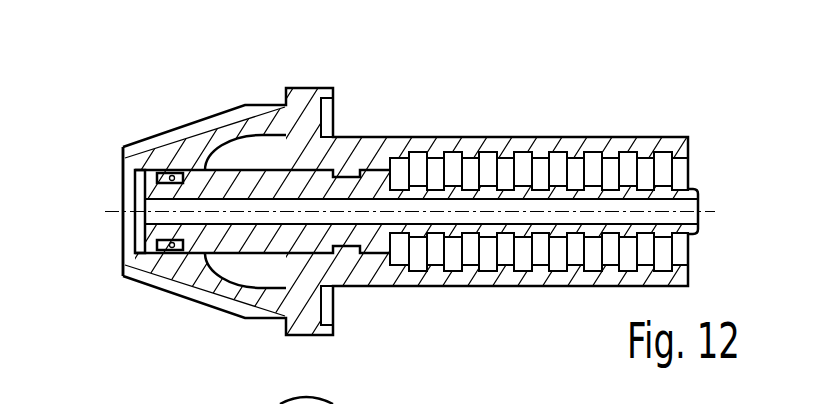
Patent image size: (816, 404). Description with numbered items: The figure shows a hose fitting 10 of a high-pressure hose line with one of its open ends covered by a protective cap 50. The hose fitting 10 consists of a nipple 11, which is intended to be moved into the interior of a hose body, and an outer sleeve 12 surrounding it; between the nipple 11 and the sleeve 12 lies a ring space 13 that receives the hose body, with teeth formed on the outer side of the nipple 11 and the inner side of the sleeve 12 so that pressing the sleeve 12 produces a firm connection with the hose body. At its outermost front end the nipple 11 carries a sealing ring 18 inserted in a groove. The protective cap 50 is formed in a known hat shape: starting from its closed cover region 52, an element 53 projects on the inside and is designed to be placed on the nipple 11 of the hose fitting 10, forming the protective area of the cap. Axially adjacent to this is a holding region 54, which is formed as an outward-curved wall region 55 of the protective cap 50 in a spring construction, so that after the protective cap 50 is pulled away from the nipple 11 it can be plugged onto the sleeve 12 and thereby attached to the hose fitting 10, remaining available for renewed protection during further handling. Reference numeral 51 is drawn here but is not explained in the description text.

The hose fitting 10 is at (600, 108).
The nipple 11 is at (262, 233).
The sleeve 12 is at (493, 150).
The ring space 13 is at (658, 175).
The sealing ring 18 is at (163, 253).
The protective cap 50 is at (122, 147).
The sealing ring 51 is at (180, 158).
The closed cover region 52 is at (122, 193).
The element 53 is at (197, 252).
The holding region 54 is at (260, 104).
The outward-curved wall region 55 is at (240, 132).